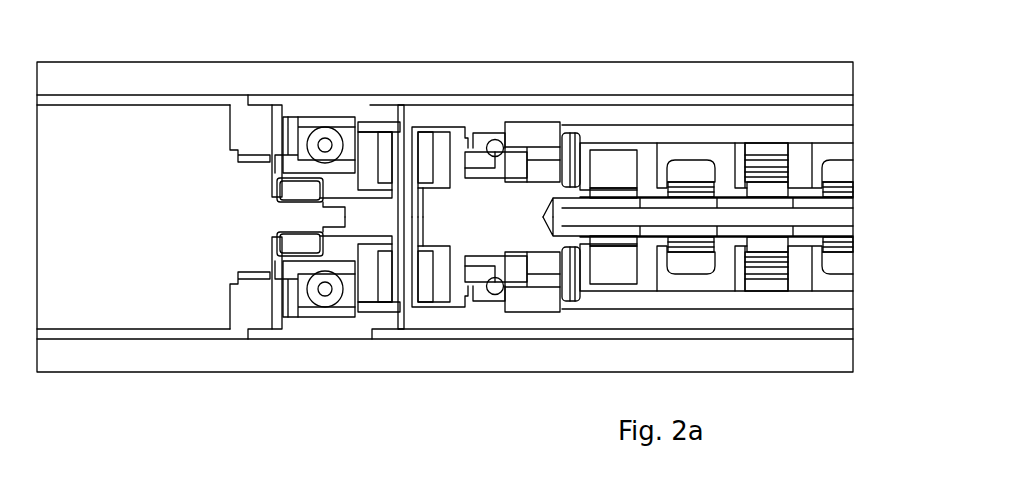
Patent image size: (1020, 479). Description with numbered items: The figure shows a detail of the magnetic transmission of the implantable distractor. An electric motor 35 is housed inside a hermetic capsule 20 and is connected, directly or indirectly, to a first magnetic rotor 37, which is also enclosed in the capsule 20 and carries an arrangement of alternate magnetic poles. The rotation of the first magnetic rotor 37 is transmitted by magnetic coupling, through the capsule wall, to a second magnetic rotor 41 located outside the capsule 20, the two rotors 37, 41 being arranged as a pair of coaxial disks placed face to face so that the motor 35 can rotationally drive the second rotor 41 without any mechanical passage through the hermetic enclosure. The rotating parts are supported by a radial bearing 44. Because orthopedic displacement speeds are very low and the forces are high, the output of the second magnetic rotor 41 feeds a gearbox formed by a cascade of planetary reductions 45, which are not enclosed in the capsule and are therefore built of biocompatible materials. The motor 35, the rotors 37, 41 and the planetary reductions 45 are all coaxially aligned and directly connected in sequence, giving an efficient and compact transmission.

The hermetic capsule 20 is at (242, 325).
The electric motor 35 is at (163, 112).
The first magnetic rotor 37 is at (403, 285).
The second magnetic rotor 41 is at (437, 300).
The radial bearing 44 is at (508, 146).
The planetary reductions 45 is at (740, 295).